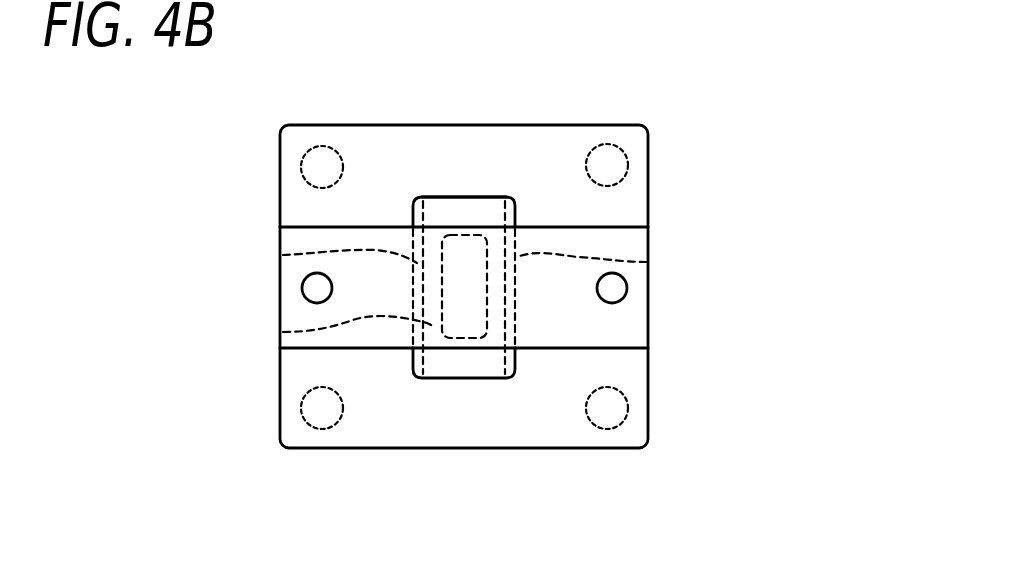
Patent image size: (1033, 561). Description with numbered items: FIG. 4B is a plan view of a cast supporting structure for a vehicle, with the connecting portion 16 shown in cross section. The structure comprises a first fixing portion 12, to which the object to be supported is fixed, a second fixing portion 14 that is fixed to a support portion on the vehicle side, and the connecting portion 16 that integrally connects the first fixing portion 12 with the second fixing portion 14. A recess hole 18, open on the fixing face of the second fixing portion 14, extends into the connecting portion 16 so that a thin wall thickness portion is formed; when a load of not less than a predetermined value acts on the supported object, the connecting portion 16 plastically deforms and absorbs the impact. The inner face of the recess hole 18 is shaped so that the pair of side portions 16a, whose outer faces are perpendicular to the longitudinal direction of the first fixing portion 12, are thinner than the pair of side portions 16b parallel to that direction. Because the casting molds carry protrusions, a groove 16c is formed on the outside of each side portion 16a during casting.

The first fixing portion 12 is at (632, 290).
The second fixing portion 14 is at (538, 432).
The connecting portion 16 is at (462, 380).
The side portion 16a is at (283, 332).
The side portion 16b is at (458, 200).
The groove 16c is at (283, 255).
The recess hole 18 is at (460, 310).